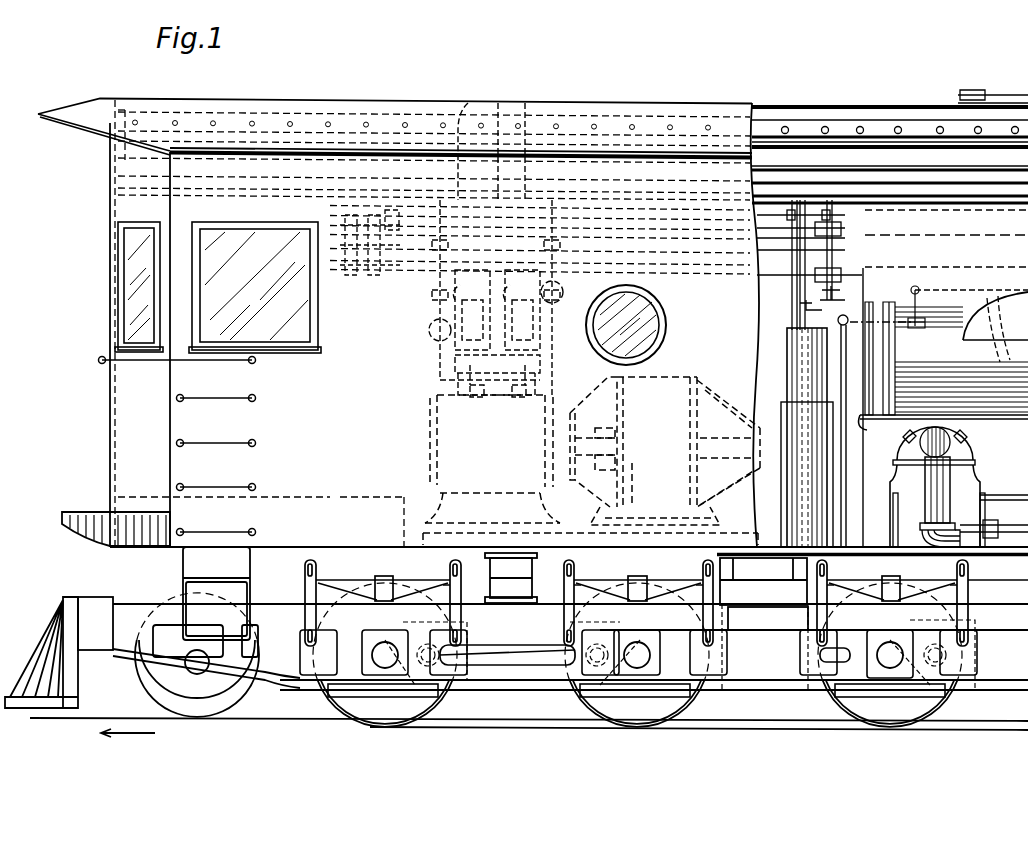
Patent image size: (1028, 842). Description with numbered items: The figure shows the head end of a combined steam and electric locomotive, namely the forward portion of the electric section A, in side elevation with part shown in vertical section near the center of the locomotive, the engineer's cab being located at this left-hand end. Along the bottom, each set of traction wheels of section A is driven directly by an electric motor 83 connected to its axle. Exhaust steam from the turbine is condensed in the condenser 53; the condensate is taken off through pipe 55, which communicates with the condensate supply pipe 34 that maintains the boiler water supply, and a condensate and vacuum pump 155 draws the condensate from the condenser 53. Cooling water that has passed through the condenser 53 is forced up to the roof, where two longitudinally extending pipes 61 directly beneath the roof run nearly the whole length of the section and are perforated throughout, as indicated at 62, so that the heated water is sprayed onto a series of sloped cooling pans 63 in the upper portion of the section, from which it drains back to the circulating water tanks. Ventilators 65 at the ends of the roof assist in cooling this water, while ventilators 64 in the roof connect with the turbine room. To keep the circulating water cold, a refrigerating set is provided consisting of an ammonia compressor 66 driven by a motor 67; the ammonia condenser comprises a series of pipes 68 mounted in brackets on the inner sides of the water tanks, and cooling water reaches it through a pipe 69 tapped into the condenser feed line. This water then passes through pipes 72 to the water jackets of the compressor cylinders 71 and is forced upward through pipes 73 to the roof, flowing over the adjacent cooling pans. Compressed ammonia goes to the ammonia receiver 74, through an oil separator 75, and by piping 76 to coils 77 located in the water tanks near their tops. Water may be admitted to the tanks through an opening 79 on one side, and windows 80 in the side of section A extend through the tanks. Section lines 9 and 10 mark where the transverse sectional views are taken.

The section line 9— 9 is at (333, 92).
The section line 10— 10 is at (862, 268).
The condensate supply pipe 34 is at (994, 523).
The condenser 53 is at (971, 326).
The condensate pipe 55 is at (945, 487).
The longitudinally extending pipes 61 is at (272, 108).
The perforations 62 is at (405, 122).
The cooling pans 63 is at (120, 176).
The ventilators 64 is at (985, 96).
The ventilators 65 is at (118, 152).
The ammonia compressor 66 is at (590, 470).
The motor 67 is at (665, 451).
The pipes of ammonia condenser 68 is at (370, 275).
The pipe 69 is at (862, 422).
The ammonia compressor cylinders 71 is at (452, 355).
The pipes 72 is at (496, 310).
The pipes 73 is at (470, 110).
The ammonia receiver 74 is at (804, 437).
The oil separator 75 is at (785, 402).
The piping 76 is at (848, 470).
The coils 77 is at (955, 255).
The opening 79 is at (528, 108).
The windows 80 is at (626, 325).
The electric motor 83 is at (455, 690).
The condensate and vacuum pump 155 is at (943, 490).
The electric section A is at (628, 102).